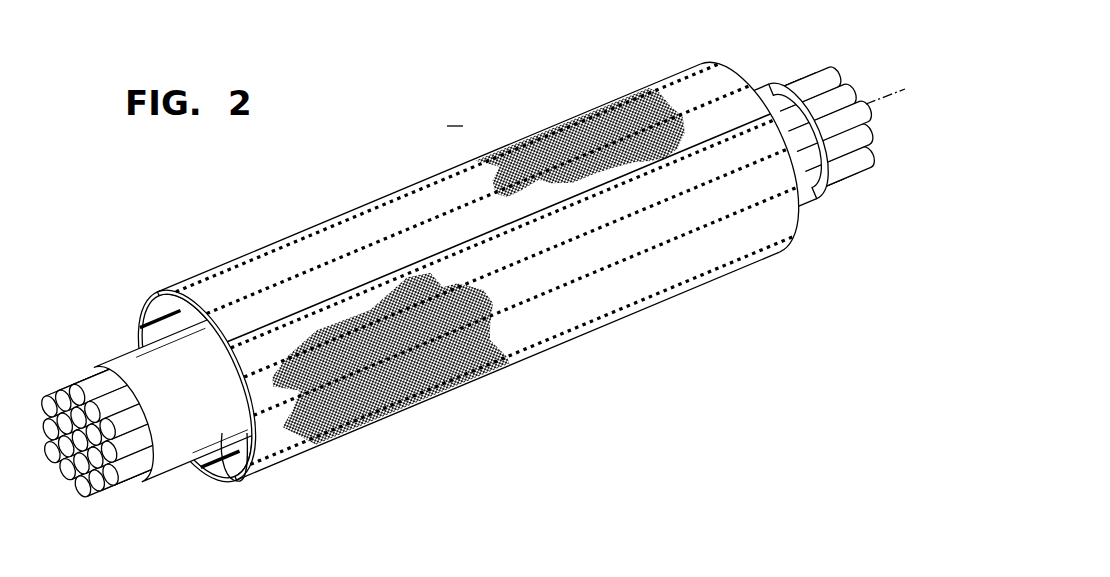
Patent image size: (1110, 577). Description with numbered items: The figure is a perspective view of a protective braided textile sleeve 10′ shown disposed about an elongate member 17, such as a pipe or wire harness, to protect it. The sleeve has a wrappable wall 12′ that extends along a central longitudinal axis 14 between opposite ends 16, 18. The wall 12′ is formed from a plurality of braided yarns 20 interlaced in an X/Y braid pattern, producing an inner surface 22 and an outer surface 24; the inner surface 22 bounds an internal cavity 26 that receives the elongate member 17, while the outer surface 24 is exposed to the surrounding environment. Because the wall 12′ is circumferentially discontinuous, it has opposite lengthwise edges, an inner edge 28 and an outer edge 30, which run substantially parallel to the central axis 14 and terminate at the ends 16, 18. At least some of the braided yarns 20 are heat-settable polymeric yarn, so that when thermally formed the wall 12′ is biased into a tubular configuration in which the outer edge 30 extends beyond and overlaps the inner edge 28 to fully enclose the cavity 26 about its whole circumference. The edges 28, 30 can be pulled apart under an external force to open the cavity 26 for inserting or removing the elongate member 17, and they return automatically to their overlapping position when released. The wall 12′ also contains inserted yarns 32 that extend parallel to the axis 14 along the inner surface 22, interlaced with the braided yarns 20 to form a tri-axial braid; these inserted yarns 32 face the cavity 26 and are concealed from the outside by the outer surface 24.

The protective braided textile sleeve 10′ is at (465, 286).
The wrappable wall 12′ is at (465, 286).
The central longitudinal axis 14 is at (50, 452).
The end 16 is at (159, 430).
The elongate member 17 is at (784, 100).
The end 18 is at (797, 217).
The braided yarns 20 is at (447, 264).
The inner surface 22 is at (239, 464).
The outer surface 24 is at (652, 266).
The internal cavity 26 is at (212, 349).
The inner edge 28 is at (140, 311).
The outer edge 30 is at (318, 303).
The inserted yarns 32 is at (146, 320).